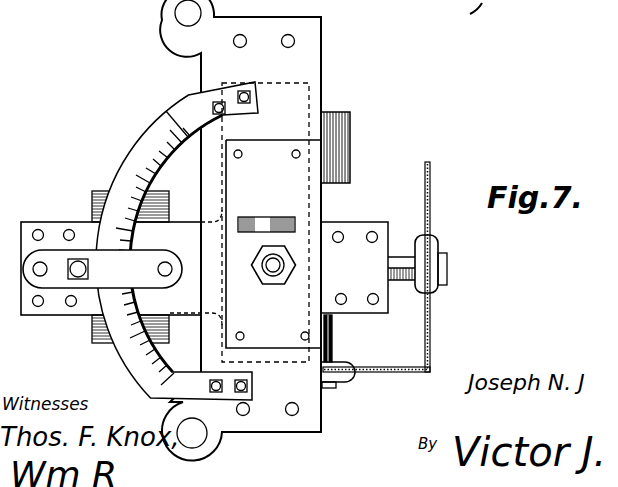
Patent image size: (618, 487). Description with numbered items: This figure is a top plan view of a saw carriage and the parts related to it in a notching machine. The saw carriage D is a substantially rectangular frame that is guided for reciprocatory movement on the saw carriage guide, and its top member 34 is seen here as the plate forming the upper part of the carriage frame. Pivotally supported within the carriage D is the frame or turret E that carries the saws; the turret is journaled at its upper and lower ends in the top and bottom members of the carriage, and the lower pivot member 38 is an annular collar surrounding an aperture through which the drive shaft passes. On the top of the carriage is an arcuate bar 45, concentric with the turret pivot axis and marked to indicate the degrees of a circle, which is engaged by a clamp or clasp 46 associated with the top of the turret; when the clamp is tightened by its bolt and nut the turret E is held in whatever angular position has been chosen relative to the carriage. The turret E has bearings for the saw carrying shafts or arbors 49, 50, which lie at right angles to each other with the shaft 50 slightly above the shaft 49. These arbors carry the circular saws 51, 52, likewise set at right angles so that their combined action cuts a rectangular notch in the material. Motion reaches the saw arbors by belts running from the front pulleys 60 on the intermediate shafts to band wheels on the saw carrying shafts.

The top member 34 is at (300, 67).
The arcuate bar 45 is at (180, 113).
The clamp or clasp 46 is at (42, 245).
The front pulleys 60 is at (100, 343).
The turret E is at (70, 222).
The saw carriage D is at (311, 222).
The pivot member 38 is at (273, 268).
The saw carrying shaft or arbor 49 is at (334, 342).
The saw carrying shaft or arbor 50 is at (447, 268).
The circular saw 51 is at (398, 372).
The circular saw 52 is at (432, 333).